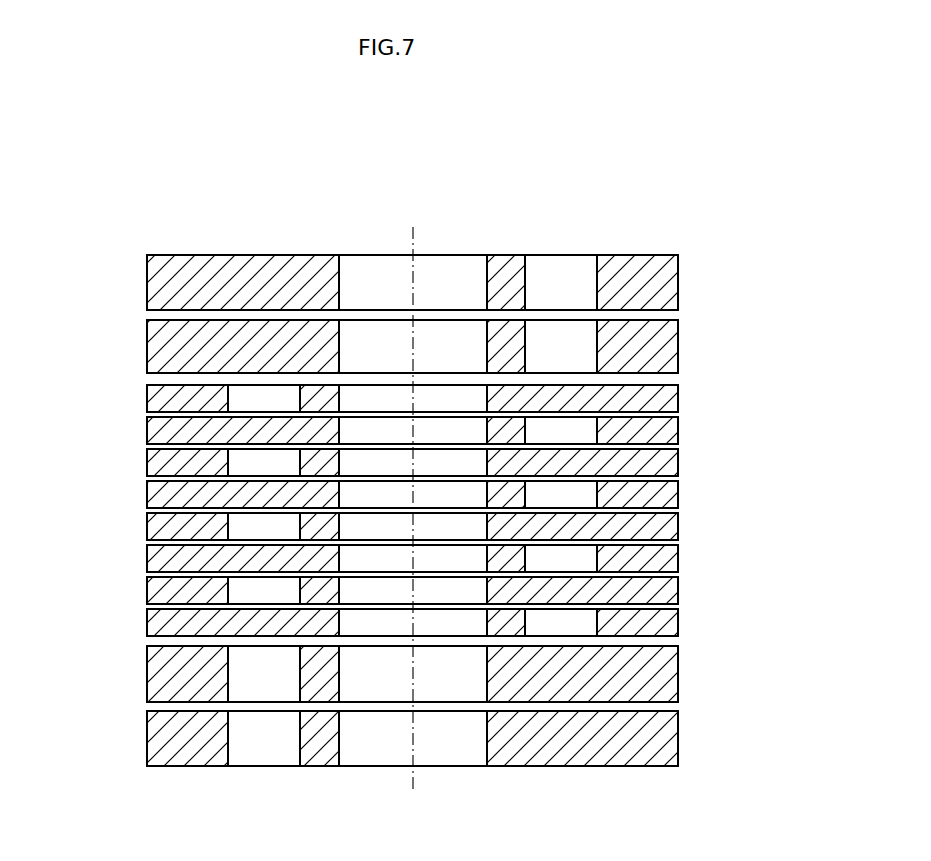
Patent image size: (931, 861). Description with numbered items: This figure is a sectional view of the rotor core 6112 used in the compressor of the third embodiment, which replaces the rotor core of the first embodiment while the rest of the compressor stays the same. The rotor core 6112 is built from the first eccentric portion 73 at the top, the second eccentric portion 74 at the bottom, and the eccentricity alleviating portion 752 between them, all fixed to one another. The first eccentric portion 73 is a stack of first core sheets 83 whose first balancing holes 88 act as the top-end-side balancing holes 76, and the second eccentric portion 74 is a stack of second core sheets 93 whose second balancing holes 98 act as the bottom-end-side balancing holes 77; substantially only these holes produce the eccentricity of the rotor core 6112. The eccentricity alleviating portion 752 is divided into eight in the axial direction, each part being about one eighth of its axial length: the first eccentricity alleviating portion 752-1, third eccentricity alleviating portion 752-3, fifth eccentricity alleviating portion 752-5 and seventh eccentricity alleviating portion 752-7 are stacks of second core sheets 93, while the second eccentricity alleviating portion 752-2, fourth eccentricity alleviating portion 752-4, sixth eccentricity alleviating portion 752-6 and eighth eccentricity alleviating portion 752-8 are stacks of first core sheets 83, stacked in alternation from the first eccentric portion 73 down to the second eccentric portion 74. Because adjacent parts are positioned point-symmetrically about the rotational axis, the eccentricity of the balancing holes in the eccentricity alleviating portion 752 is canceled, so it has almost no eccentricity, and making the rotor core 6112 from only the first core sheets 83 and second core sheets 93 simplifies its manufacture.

The rotor core 6112 is at (611, 176).
The first eccentric portion 73 is at (143, 255).
The first core sheet 83 is at (385, 285).
The top-end-side balancing hole 76 is at (560, 272).
The first balancing hole 88 is at (557, 430).
The second balancing hole 98 is at (259, 399).
The eccentricity alleviating portion 752 is at (143, 385).
The first eccentricity alleviating portion 752-1 is at (663, 400).
The second eccentricity alleviating portion 752-2 is at (663, 432).
The third eccentricity alleviating portion 752-3 is at (663, 464).
The fourth eccentricity alleviating portion 752-4 is at (663, 496).
The fifth eccentricity alleviating portion 752-5 is at (663, 528).
The sixth eccentricity alleviating portion 752-6 is at (663, 560).
The seventh eccentricity alleviating portion 752-7 is at (663, 592).
The eighth eccentricity alleviating portion 752-8 is at (663, 624).
The second eccentric portion 74 is at (143, 646).
The second core sheet 93 is at (385, 737).
The bottom-end-side balancing hole 77 is at (265, 747).